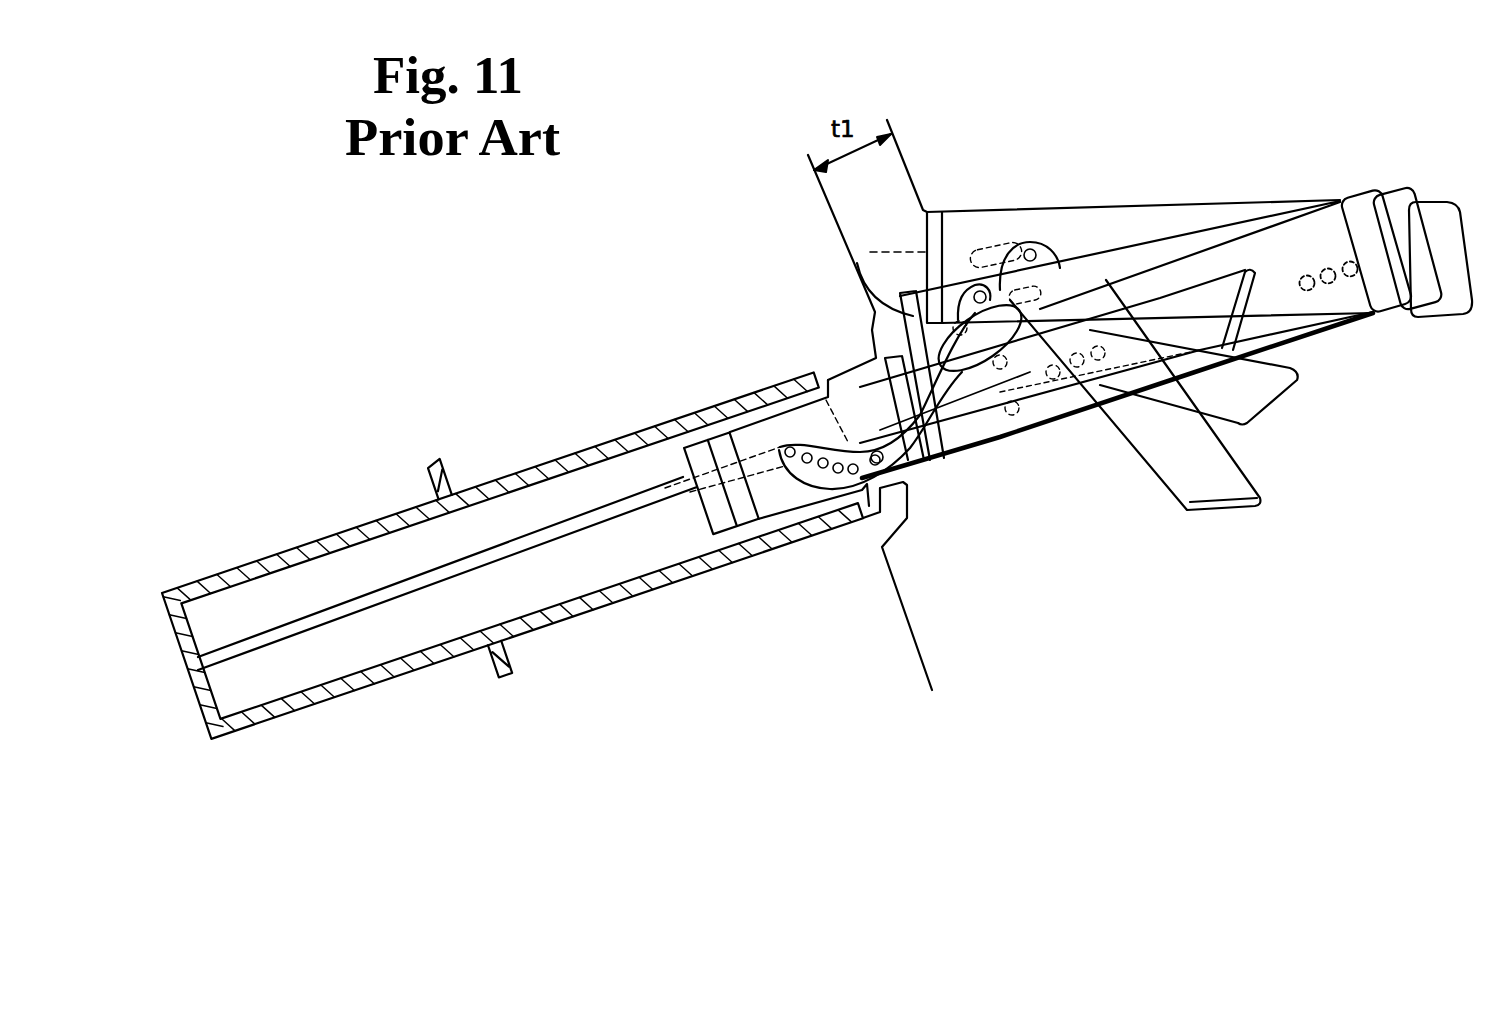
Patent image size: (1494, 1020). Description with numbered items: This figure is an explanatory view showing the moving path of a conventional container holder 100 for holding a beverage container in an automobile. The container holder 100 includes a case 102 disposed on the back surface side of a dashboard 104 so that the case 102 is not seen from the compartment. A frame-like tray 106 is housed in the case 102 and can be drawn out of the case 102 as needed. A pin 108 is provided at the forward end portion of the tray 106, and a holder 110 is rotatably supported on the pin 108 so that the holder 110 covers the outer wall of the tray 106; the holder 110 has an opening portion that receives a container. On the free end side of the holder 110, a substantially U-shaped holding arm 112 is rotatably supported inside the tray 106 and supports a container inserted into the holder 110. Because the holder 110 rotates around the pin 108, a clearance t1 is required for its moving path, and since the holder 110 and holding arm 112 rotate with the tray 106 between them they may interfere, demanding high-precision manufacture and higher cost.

The container holder 100 is at (1138, 184).
The case 102 is at (658, 578).
The dashboard 104 is at (911, 664).
The tray 106 is at (787, 495).
The pin 108 is at (1331, 285).
The holder 110 is at (905, 318).
The holding arm 112 is at (1135, 400).